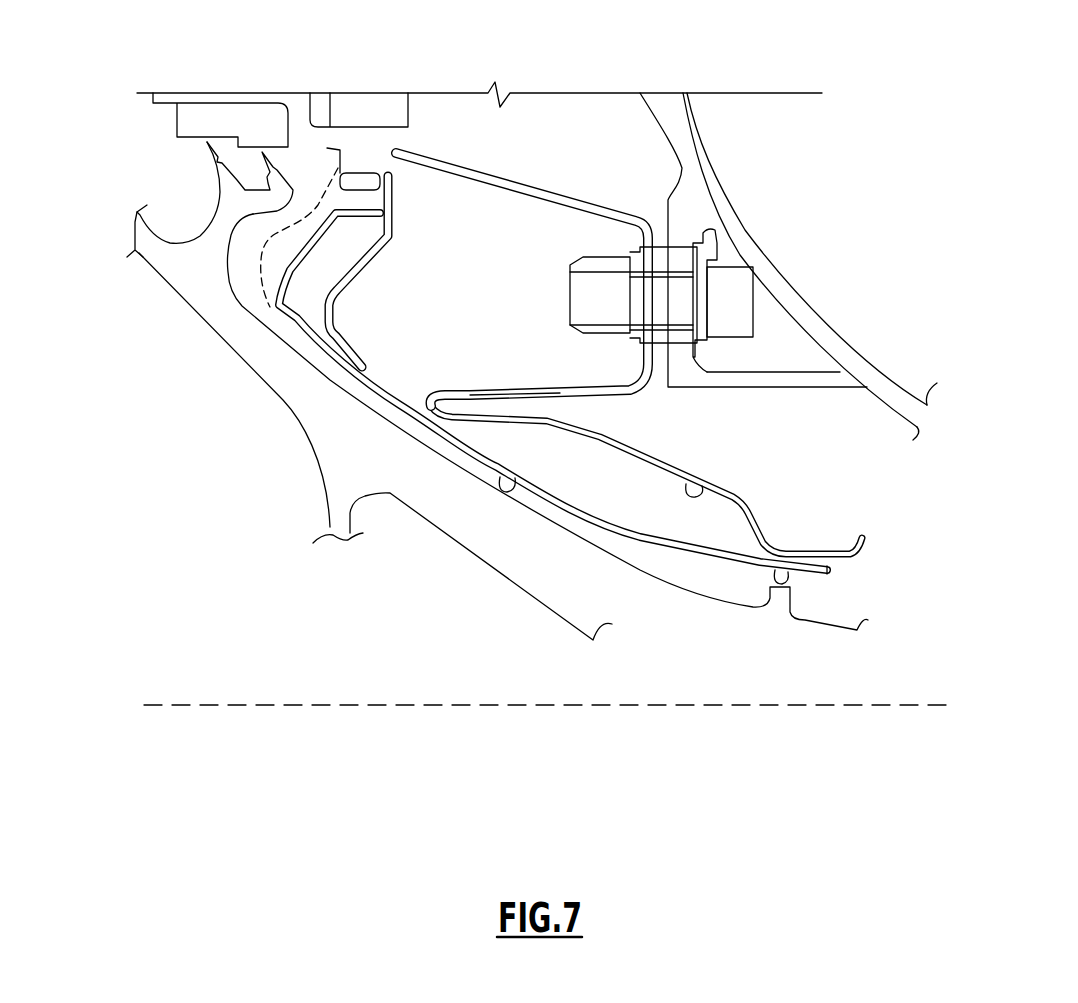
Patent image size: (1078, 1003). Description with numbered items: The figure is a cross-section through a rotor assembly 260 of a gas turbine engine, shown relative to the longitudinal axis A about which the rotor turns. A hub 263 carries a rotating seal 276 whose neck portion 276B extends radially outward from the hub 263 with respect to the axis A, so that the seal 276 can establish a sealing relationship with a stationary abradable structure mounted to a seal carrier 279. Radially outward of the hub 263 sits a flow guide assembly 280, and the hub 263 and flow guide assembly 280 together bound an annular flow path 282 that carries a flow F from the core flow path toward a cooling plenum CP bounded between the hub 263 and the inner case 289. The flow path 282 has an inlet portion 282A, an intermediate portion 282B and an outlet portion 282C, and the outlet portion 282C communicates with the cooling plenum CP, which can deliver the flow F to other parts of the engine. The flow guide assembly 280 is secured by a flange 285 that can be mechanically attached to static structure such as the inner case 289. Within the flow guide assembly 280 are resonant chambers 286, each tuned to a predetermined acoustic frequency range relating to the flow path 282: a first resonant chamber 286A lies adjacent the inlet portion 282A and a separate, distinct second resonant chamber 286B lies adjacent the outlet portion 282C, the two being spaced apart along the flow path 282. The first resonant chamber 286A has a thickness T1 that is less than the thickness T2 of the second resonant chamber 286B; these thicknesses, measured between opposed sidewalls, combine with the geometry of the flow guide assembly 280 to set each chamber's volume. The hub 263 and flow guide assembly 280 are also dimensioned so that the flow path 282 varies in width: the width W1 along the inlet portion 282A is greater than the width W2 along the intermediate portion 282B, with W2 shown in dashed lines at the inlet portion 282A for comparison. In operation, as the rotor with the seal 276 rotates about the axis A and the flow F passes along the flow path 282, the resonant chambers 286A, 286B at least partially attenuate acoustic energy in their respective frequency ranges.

The rotor assembly 260 is at (127, 68).
The seal 276 is at (217, 192).
The neck portion 276B is at (229, 229).
The hub 263 is at (197, 303).
The flow path 282 is at (363, 390).
The inlet portion 282A is at (383, 170).
The intermediate portion 282B is at (510, 488).
The outlet portion 282C is at (785, 568).
The seal carrier 279 is at (553, 193).
The flange 285 is at (493, 390).
The resonant chambers 286 is at (436, 271).
The first resonant chamber 286A is at (394, 243).
The second resonant chamber 286B is at (703, 485).
The flow guide assembly 280 is at (448, 283).
The inner case 289 is at (800, 320).
The cross-sectional width W1 is at (283, 215).
The cross-sectional width W2 is at (533, 561).
The thickness T1 is at (360, 285).
The thickness T2 is at (651, 455).
The flow F is at (300, 205).
The cooling plenum CP is at (928, 518).
The longitudinal axis A is at (798, 705).